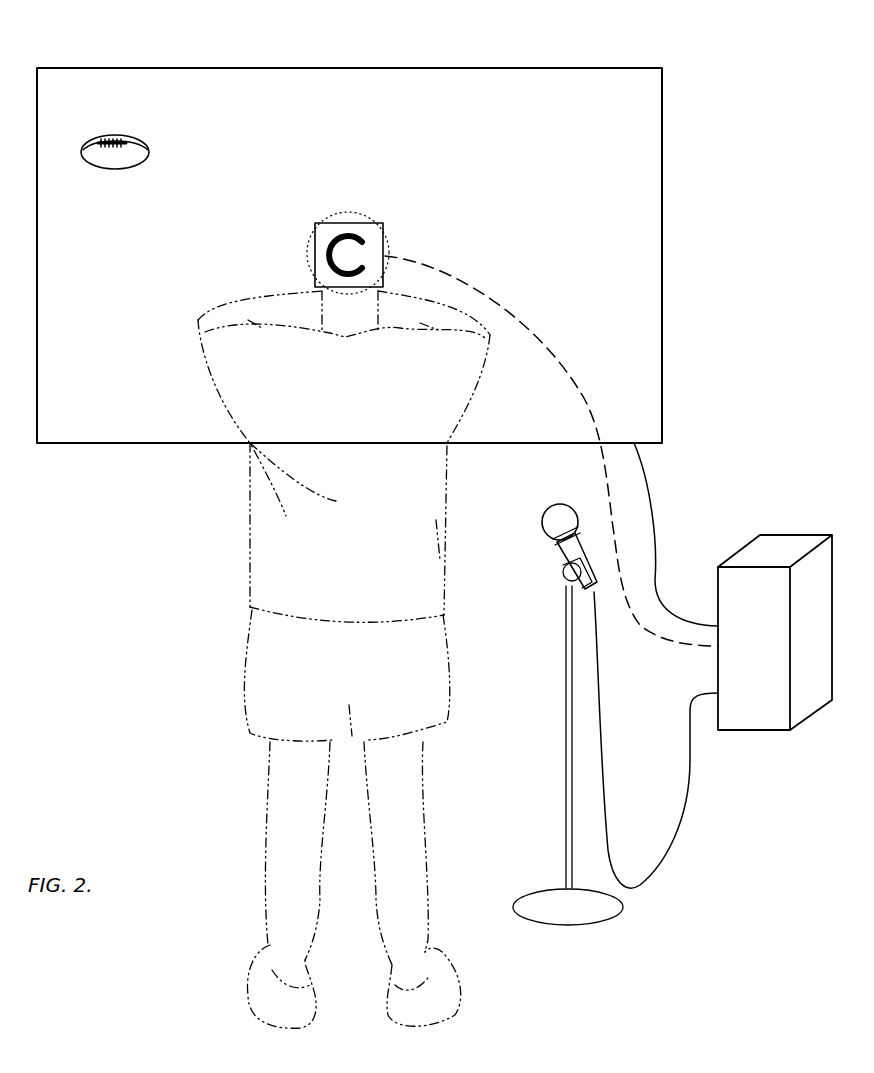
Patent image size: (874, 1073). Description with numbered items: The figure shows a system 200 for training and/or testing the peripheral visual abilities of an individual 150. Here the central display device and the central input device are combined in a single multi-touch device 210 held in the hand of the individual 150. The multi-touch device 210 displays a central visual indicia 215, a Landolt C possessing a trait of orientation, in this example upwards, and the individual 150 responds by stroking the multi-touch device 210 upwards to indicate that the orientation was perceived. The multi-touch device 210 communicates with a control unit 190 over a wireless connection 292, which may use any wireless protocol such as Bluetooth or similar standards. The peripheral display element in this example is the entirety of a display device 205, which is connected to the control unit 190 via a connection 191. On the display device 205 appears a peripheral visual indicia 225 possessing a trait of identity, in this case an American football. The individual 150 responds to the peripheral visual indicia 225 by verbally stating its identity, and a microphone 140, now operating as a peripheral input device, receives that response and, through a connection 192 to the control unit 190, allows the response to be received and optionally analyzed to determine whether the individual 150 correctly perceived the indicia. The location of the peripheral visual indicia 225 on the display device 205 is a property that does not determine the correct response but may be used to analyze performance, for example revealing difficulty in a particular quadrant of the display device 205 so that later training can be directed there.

The system 200 is at (706, 65).
The display device 205 is at (663, 152).
The multi-touch device 210 is at (315, 234).
The central visual indicia 215 is at (320, 256).
The peripheral visual indicia 225 is at (114, 136).
The individual 150 is at (249, 539).
The microphone 140 is at (556, 508).
The control unit 190 is at (792, 535).
The connection 191 is at (657, 527).
The connection 192 is at (692, 780).
The wireless connection 292 is at (652, 632).